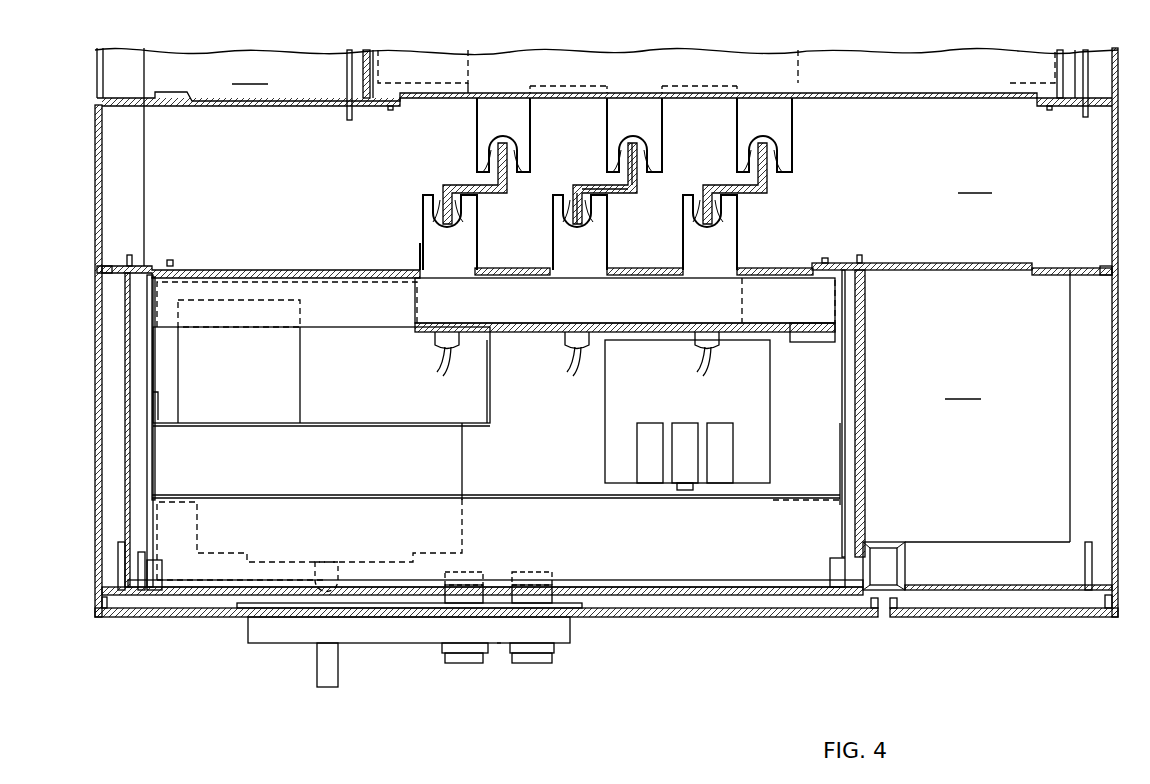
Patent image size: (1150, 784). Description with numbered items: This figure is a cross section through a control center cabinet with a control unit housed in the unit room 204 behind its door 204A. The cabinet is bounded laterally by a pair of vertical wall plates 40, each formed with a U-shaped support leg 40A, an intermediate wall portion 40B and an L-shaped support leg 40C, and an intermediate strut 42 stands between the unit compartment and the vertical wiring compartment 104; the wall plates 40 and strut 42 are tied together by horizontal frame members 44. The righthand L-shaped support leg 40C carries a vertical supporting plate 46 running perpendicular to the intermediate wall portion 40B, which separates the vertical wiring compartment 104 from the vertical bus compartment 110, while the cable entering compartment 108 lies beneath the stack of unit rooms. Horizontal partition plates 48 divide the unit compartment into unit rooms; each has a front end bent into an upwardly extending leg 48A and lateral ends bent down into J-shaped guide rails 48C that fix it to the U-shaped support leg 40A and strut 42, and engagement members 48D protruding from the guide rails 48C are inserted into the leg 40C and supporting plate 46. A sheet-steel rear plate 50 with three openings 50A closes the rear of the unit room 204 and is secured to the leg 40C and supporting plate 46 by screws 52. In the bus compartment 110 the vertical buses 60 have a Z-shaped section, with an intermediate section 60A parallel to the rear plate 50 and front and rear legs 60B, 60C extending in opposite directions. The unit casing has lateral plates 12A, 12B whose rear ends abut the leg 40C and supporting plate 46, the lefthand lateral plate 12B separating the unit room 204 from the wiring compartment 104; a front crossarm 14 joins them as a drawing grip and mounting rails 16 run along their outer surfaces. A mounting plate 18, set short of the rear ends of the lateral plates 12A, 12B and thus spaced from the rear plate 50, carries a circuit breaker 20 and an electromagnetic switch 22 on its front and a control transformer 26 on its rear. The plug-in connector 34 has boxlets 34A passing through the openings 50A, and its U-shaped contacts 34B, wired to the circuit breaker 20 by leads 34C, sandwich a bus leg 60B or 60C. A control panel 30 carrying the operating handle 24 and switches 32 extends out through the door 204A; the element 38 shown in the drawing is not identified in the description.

The righthand lateral plate 12A is at (155, 482).
The lefthand lateral plate 12B is at (838, 450).
The front crossarm 14 is at (561, 506).
The mounting rails 16 is at (146, 448).
The mounting plate 18 is at (490, 379).
The circuit breaker 20 is at (464, 472).
The electromagnetic switch 22 is at (772, 410).
The operating handle 24 is at (317, 672).
The control transformer 26 is at (302, 392).
The control panel 30 is at (499, 646).
The switches 32 is at (466, 665).
The plug-in type connector 34 is at (798, 64).
The boxlets 34A is at (737, 206).
The U-shaped contacts 34B is at (738, 246).
The leads 34C is at (445, 372).
The conductor 38 is at (268, 328).
The vertical wall plates 40 is at (97, 600).
The U-shaped support leg 40A is at (1085, 570).
The intermediate wall portion 40B is at (1070, 436).
The L-shaped support leg 40C is at (113, 266).
The intermediate strut 42 is at (907, 570).
The horizontal frame members 44 is at (147, 153).
The vertical supporting plate 46 is at (272, 106).
The horizontal partition plates 48 is at (866, 358).
The upwardly extending leg 48A is at (795, 596).
The J-shaped guide rails 48C is at (843, 574).
The engagement members 48D is at (131, 256).
The rear plate 50 is at (290, 268).
The openings 50A is at (418, 262).
The screws 52 is at (173, 262).
The vertical buses 60 is at (445, 200).
The intermediate section 60A is at (603, 186).
The front leg 60B is at (575, 206).
The rear leg 60C is at (642, 174).
The vertical wiring compartment 104 is at (963, 387).
The cable entering compartment 108 is at (250, 72).
The vertical bus compartment 110 is at (975, 181).
The unit room 204 is at (545, 425).
The door 204A is at (706, 618).